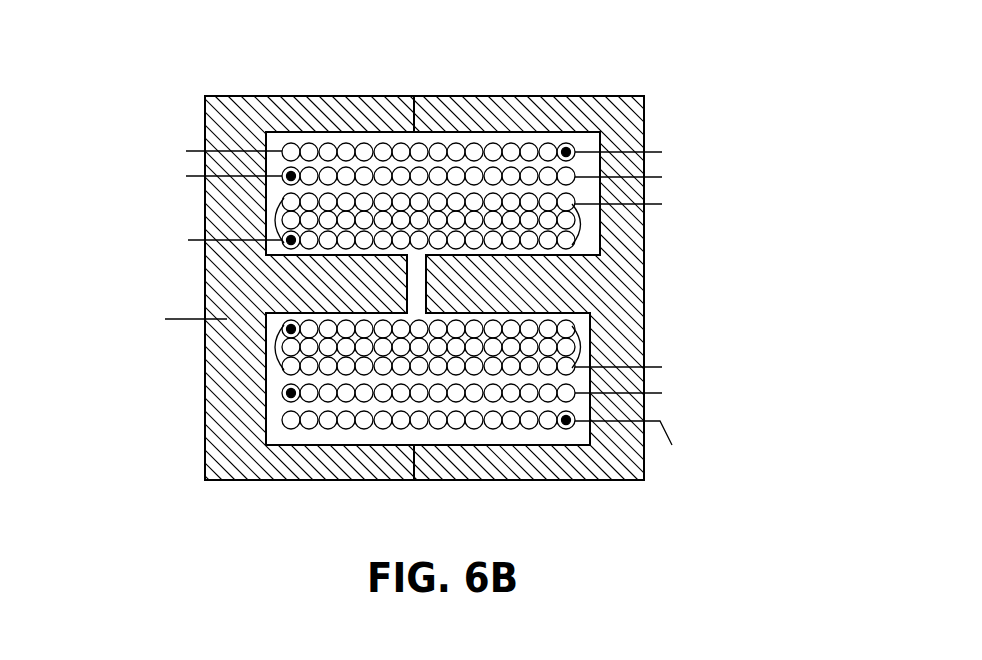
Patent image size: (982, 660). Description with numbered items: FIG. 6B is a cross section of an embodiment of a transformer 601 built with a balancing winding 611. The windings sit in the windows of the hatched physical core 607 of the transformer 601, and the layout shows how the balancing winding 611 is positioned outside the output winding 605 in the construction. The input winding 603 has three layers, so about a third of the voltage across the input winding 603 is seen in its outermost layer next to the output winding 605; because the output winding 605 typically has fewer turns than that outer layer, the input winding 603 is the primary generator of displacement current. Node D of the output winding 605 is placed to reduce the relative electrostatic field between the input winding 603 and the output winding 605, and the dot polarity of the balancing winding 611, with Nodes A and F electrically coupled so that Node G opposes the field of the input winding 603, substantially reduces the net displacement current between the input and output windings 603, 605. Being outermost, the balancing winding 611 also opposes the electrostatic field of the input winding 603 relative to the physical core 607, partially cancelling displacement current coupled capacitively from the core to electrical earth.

The transformer 601 is at (607, 34).
The input winding 603 is at (103, 254).
The output winding 605 is at (105, 179).
The physical core 607 is at (203, 375).
The balancing winding 611 is at (105, 150).